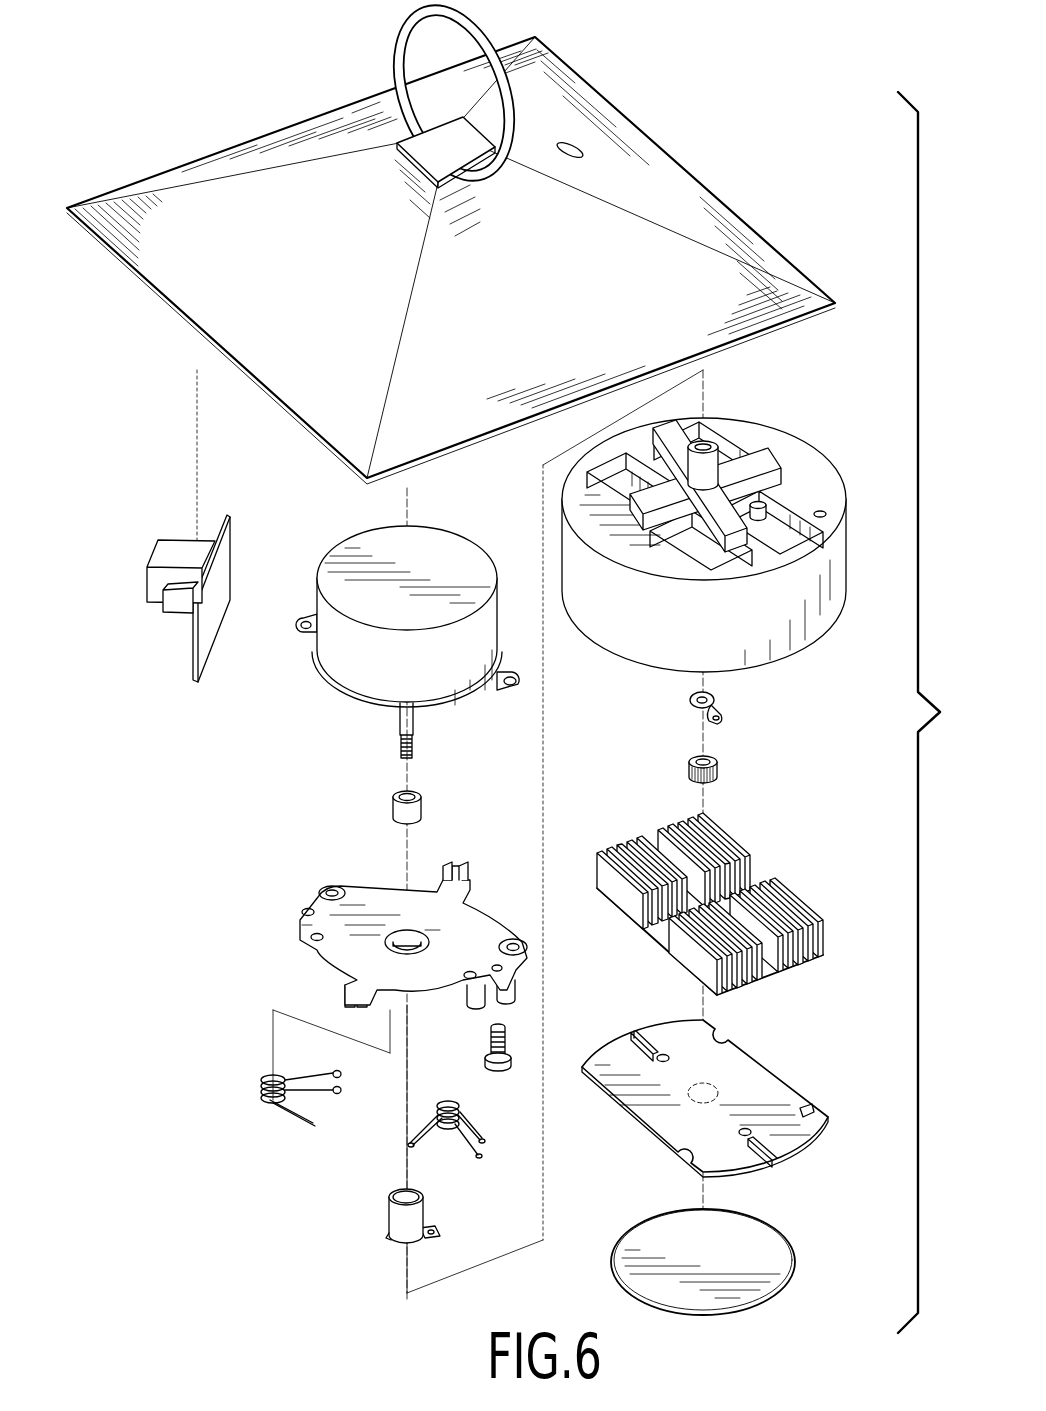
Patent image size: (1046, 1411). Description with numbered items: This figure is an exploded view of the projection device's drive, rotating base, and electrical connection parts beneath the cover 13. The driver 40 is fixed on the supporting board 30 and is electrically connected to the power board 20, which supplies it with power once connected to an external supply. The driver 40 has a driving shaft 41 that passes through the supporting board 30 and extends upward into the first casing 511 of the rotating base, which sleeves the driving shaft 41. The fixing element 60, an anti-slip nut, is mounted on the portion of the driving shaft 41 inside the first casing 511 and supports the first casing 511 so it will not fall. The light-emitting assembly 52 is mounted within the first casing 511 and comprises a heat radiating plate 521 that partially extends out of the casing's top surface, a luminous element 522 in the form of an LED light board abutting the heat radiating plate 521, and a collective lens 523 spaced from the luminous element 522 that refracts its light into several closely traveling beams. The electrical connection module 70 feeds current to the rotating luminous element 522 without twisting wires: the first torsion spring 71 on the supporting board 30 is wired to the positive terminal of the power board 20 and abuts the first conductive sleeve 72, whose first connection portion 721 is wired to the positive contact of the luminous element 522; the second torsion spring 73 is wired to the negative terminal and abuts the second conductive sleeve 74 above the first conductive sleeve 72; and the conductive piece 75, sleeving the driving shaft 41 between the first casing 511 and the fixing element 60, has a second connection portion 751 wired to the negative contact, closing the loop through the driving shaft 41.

The cover 13 is at (188, 167).
The power board 20 is at (176, 552).
The supporting board 30 is at (366, 898).
The driver 40 is at (352, 523).
The driving shaft 41 is at (406, 710).
The first casing 511 is at (760, 432).
The light-emitting assembly 52 is at (736, 884).
The heat radiating plate 521 is at (778, 905).
The luminous element 522 is at (765, 1078).
The collective lens 523 is at (740, 1240).
The fixing element 60 is at (700, 775).
The electrical connection module 70 is at (237, 1177).
The first torsion spring 71 is at (460, 1103).
The first conductive sleeve 72 is at (411, 1220).
The first connection portion 721 is at (433, 1232).
The second torsion spring 73 is at (263, 1088).
The second conductive sleeve 74 is at (406, 815).
The conductive piece 75 is at (782, 698).
The second connection portion 751 is at (722, 708).